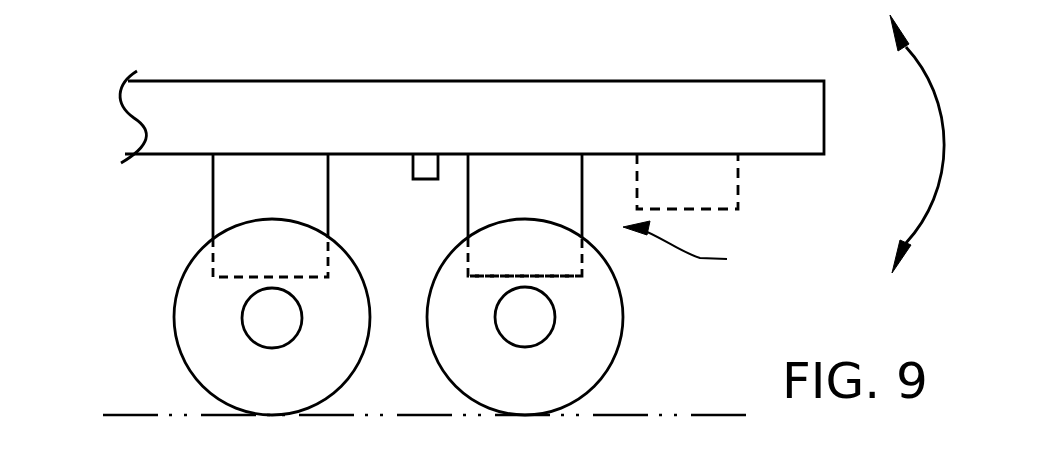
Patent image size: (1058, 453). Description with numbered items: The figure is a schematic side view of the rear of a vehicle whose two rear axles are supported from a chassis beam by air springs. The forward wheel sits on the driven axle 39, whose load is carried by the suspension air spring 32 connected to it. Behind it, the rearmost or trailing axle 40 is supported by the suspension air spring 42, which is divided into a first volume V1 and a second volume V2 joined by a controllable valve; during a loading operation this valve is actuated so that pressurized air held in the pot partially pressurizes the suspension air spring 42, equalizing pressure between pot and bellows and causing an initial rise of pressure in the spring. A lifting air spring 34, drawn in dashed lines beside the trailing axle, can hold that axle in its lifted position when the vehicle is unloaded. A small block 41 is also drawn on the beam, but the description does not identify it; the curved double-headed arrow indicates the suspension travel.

The suspension air spring 32 is at (268, 177).
The lifting air spring 34 is at (680, 168).
The driven axle 39 is at (253, 322).
The trailing axle 40 is at (545, 323).
The stop block 41 is at (422, 168).
The suspension air spring 42 is at (695, 250).
The first volume V1 is at (545, 165).
The second volume V2 is at (562, 255).